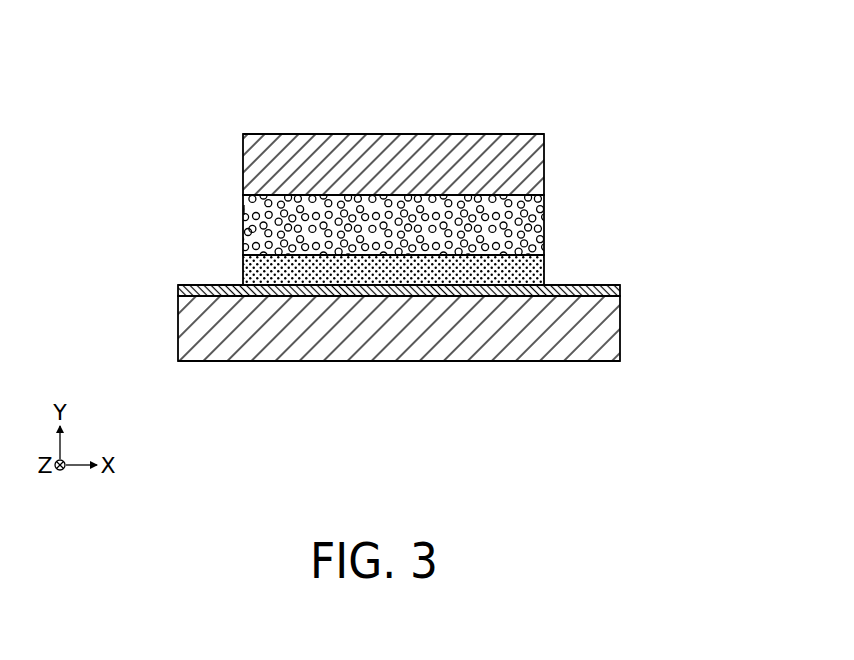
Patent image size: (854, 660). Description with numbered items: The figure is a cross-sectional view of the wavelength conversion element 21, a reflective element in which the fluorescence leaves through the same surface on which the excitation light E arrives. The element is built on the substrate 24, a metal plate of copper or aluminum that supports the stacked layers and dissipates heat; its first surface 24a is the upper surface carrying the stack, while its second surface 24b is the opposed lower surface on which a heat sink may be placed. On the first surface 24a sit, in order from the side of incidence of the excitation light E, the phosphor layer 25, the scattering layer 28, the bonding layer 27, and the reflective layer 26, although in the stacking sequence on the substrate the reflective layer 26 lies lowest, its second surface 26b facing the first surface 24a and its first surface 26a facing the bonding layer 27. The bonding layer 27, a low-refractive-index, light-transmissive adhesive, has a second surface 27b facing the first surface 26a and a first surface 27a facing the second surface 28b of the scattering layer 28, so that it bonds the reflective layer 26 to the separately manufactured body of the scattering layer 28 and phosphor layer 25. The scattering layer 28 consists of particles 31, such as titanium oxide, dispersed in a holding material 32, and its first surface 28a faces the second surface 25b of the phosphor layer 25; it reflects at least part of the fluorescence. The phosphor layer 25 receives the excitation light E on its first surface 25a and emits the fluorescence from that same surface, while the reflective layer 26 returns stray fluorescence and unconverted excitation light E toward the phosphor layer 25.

The wavelength conversion element 21 is at (315, 120).
The excitation light E is at (395, 120).
The substrate 24 is at (607, 326).
The first surface of the substrate 24a is at (220, 285).
The second surface of the substrate 24b is at (216, 361).
The phosphor layer 25 is at (532, 162).
The first surface of the phosphor layer 25a is at (527, 133).
The second surface of the phosphor layer 25b is at (526, 195).
The reflective layer 26 is at (620, 290).
The first surface of the reflective layer 26a is at (600, 285).
The second surface of the reflective layer 26b is at (565, 297).
The bonding layer 27 is at (543, 280).
The first surface of the bonding layer 27a is at (473, 253).
The second surface of the bonding layer 27b is at (413, 285).
The scattering layer 28 is at (543, 218).
The first surface of the scattering layer 28a is at (499, 194).
The second surface of the scattering layer 28b is at (500, 255).
The particles 31 is at (247, 232).
The holding material 32 is at (247, 210).